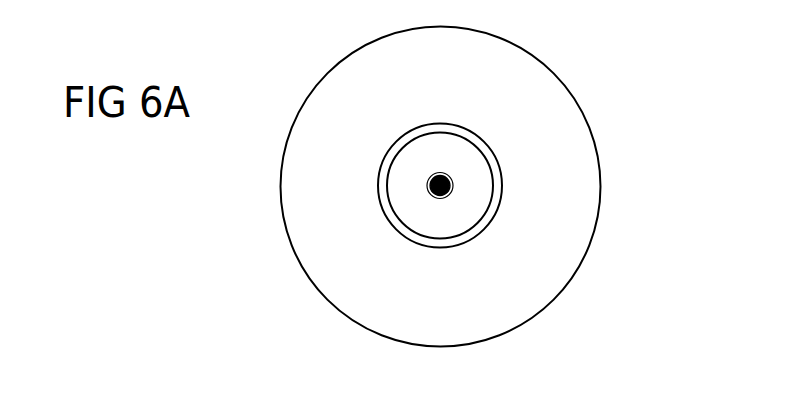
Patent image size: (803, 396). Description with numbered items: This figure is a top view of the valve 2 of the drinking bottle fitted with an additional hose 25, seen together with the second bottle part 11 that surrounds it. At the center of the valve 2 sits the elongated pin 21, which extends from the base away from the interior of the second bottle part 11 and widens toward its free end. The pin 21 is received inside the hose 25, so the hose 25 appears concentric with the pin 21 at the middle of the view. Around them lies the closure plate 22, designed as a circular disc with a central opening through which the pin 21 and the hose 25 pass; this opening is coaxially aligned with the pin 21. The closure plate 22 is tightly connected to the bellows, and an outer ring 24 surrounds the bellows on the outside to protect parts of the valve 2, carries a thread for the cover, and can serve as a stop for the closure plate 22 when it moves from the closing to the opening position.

The valve 2 is at (389, 109).
The second bottle part 11 is at (595, 143).
The pin 21 is at (432, 194).
The closure plate 22 is at (457, 163).
The outer ring 24 is at (503, 198).
The hose 25 is at (453, 180).